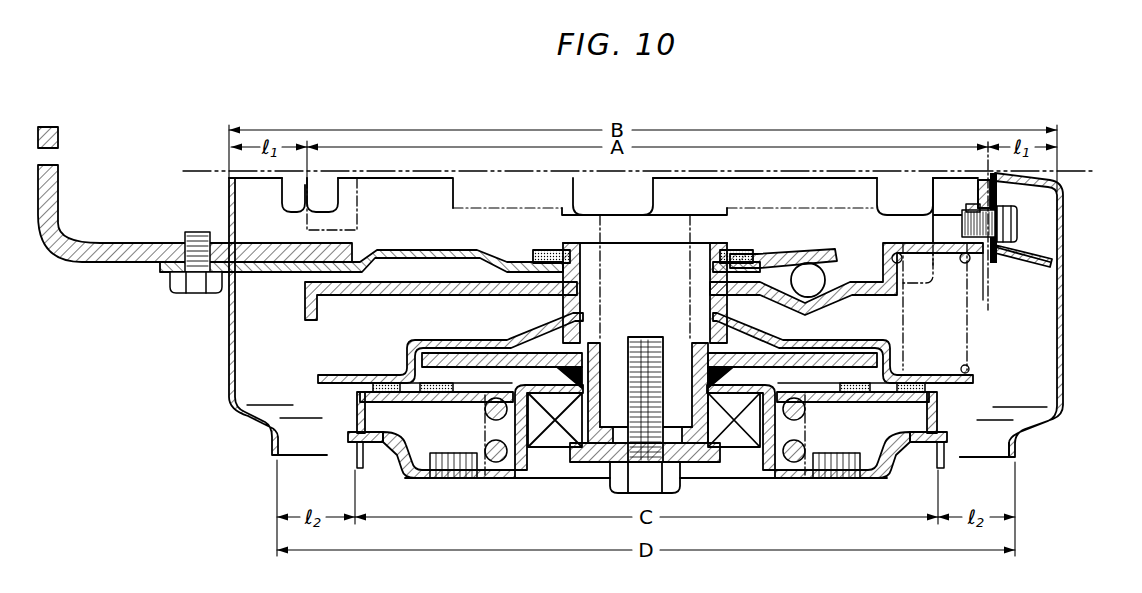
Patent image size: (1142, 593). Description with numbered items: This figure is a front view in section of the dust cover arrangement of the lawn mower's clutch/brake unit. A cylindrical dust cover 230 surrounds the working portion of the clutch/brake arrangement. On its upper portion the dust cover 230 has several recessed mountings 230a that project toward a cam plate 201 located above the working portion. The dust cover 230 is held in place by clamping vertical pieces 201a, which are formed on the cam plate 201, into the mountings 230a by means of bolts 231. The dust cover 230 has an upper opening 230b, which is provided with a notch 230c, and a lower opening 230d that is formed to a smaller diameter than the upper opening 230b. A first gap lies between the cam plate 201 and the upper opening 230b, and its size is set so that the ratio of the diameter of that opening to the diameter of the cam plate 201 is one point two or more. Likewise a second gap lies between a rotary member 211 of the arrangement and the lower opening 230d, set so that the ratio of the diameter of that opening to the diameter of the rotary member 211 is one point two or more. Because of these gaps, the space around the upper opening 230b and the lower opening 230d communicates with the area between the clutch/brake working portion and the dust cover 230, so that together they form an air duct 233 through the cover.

The dust cover 230 is at (1066, 318).
The recessed mountings 230a is at (1025, 262).
The upper opening 230b is at (229, 186).
The notch 230c is at (291, 198).
The lower opening 230d is at (1022, 447).
The bolts 231 is at (1010, 214).
The air duct 233 is at (1033, 370).
The cam plate 201 is at (868, 283).
The vertical pieces 201a is at (970, 208).
The rotary member 211 is at (800, 472).